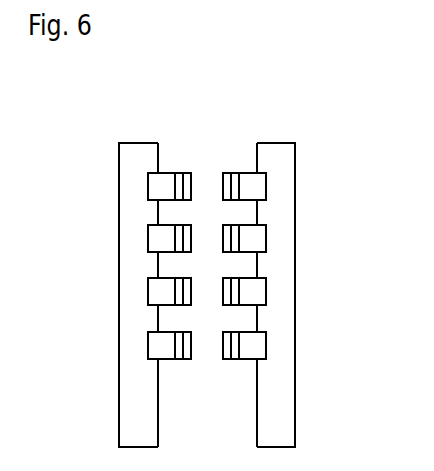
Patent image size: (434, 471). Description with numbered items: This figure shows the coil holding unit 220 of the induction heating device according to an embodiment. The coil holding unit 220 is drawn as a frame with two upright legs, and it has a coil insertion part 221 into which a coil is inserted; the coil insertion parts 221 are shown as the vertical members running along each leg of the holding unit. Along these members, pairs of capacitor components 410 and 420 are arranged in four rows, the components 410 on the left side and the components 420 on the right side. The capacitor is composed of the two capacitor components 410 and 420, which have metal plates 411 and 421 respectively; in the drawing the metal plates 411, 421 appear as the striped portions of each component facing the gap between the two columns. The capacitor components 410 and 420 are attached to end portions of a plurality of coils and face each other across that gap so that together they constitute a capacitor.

The coil holding unit 220 is at (257, 404).
The coil insertion part 221 is at (160, 172).
The capacitor component 410 is at (188, 202).
The metal plate 411 is at (189, 171).
The capacitor component 420 is at (235, 199).
The metal plate 421 is at (232, 158).